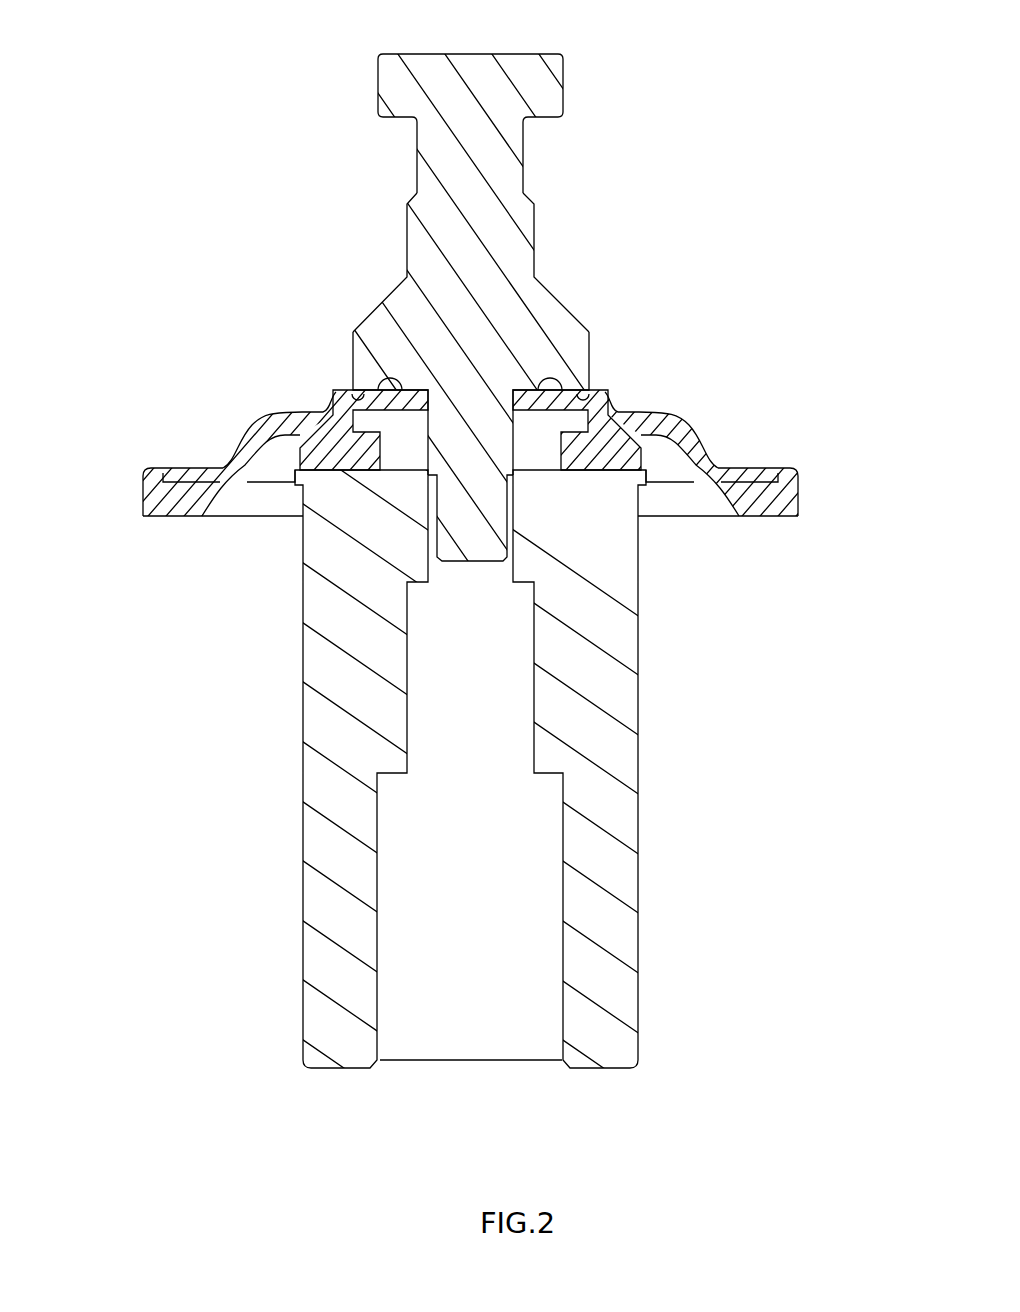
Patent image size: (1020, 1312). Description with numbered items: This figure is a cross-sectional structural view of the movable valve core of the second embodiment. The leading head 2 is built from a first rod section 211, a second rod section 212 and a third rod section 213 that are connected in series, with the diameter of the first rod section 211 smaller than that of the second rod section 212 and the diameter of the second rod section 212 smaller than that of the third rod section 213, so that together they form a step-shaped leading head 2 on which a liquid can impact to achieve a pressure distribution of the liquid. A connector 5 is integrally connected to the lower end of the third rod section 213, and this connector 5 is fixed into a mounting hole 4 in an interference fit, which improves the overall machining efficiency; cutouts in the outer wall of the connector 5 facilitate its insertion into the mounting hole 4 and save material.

The leading head 2 is at (197, 333).
The first rod section 211 is at (417, 173).
The second rod section 212 is at (407, 268).
The third rod section 213 is at (353, 367).
The mounting hole 4 is at (497, 572).
The connector 5 is at (447, 547).